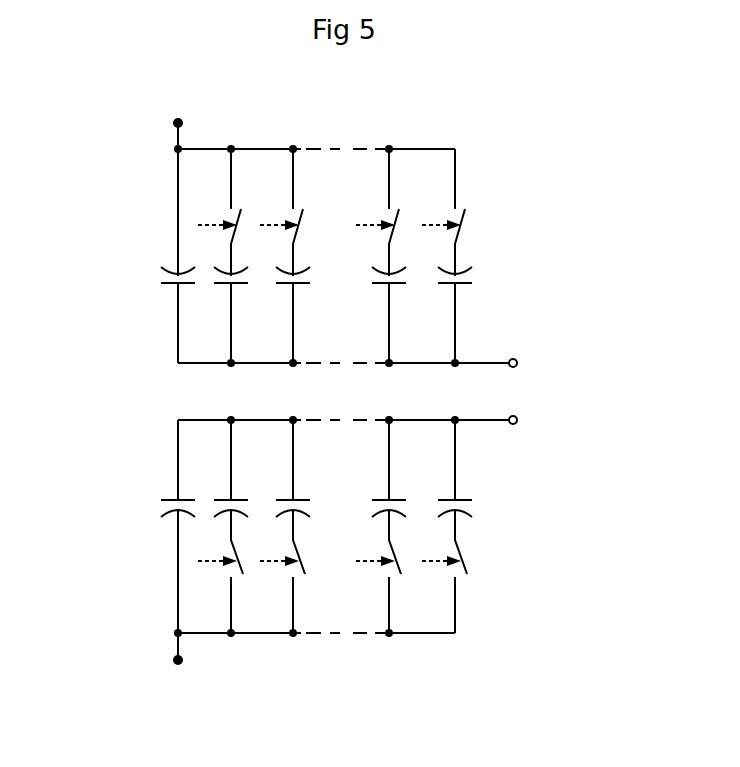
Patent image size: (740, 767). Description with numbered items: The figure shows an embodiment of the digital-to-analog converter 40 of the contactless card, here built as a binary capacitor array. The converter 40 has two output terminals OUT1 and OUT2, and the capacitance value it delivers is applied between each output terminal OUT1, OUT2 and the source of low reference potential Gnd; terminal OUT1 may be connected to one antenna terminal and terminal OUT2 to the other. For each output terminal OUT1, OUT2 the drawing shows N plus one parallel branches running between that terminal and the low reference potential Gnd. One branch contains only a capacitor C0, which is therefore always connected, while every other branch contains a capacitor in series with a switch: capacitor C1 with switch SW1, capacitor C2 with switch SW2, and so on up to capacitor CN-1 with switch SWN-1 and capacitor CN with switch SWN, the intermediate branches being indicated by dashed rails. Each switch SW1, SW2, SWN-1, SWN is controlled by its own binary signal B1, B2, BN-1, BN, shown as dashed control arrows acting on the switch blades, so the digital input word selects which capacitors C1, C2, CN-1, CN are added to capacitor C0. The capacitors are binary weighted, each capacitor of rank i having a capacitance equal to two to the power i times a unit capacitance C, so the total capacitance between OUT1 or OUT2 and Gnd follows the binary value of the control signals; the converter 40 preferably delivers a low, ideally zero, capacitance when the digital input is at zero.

The digital-to-analog converter 40 is at (94, 222).
The source of low reference potential Gnd is at (174, 123).
The output terminal OUT1 is at (515, 358).
The output terminal OUT2 is at (516, 426).
The switch SW1 is at (242, 212).
The switch SW2 is at (304, 212).
The switch SWN-1 is at (420, 196).
The switch SWN is at (466, 212).
The binary signal B1 is at (216, 228).
The binary signal B2 is at (277, 228).
The binary signal BN-1 is at (373, 228).
The binary signal BN is at (439, 228).
The capacitor C0 is at (168, 287).
The capacitor C1 is at (222, 287).
The capacitor C2 is at (284, 287).
The capacitor CN-1 is at (380, 287).
The capacitor CN is at (446, 287).